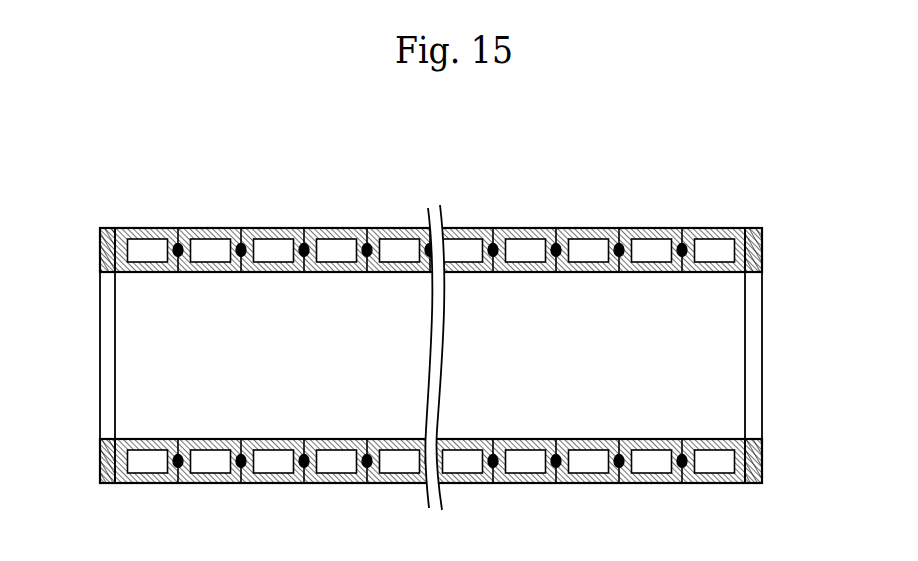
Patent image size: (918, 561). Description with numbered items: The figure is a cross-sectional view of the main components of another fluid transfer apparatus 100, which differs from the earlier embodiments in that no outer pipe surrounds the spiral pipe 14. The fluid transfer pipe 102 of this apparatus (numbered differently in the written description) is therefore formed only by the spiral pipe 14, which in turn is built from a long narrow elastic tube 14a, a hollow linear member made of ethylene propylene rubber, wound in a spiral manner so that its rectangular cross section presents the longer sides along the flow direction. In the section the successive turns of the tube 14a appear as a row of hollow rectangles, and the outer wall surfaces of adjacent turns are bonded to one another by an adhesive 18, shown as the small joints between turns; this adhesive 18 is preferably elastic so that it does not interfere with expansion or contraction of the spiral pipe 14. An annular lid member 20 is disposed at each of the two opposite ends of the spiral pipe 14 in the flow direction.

The fluid transfer apparatus 100 is at (785, 163).
The cell band 102 is at (688, 220).
The spiral pipe 14 is at (133, 280).
The tube 14a is at (228, 228).
The adhesive 18 is at (362, 228).
The lid member 20 is at (100, 457).